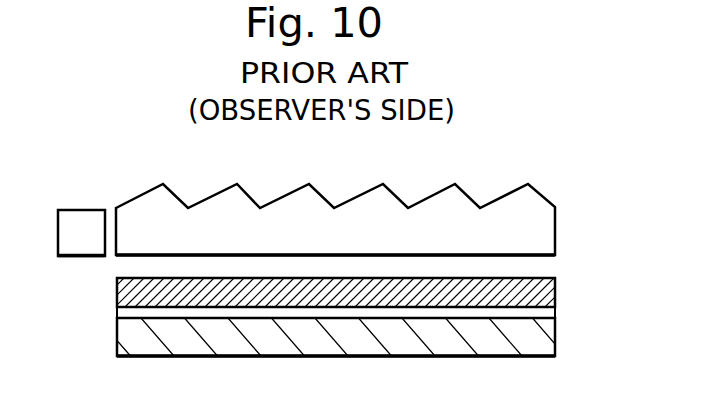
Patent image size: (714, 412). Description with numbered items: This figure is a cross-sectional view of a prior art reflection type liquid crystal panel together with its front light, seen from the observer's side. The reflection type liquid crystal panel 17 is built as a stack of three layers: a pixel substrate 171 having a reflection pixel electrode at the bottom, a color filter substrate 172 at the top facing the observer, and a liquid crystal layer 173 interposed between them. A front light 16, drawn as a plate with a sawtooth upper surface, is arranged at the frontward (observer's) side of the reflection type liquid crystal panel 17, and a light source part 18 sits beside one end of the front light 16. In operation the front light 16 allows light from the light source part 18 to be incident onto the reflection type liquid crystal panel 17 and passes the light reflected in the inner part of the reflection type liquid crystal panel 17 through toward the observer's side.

The front light 16 is at (535, 203).
The reflection type liquid crystal panel 17 is at (88, 281).
The light source part 18 is at (73, 218).
The pixel substrate 171 is at (547, 344).
The color filter substrate 172 is at (550, 283).
The liquid crystal layer 173 is at (548, 312).